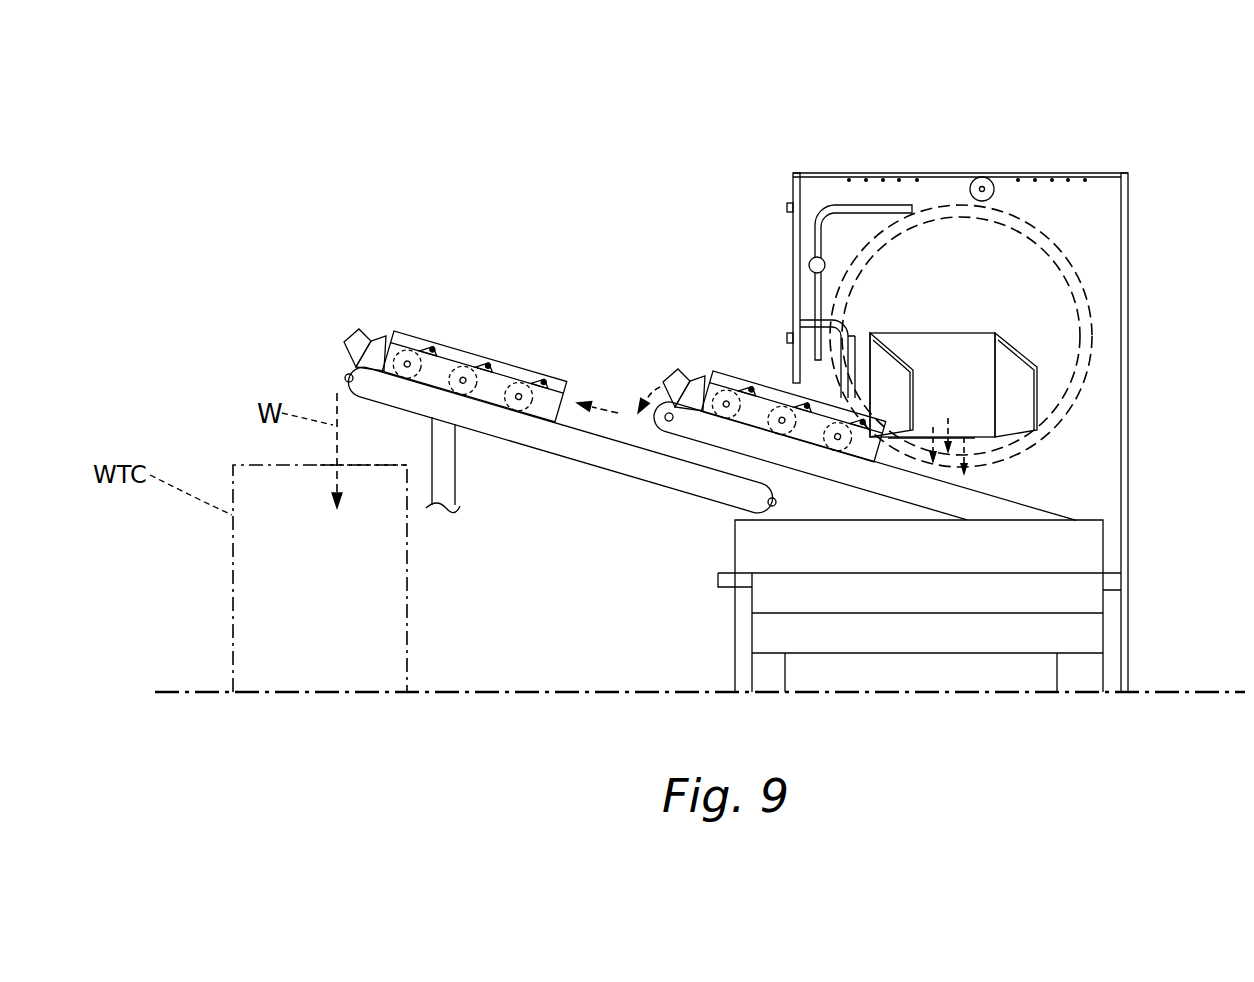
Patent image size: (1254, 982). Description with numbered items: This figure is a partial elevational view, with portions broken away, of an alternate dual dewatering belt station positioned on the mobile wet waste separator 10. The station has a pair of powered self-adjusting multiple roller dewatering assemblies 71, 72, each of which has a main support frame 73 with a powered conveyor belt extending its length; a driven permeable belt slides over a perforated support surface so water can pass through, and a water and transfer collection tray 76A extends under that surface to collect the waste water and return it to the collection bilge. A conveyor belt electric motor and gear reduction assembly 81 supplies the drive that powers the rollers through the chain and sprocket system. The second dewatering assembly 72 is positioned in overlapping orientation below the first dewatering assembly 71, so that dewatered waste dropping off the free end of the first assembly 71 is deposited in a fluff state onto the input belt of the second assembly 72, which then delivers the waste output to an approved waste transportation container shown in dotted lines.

The mobile wet waste separator 10 is at (1100, 130).
The first powered multiple roller dewatering assembly 71 is at (749, 356).
The second powered multiple roller dewatering assembly 72 is at (481, 322).
The main support frame 73 is at (560, 489).
The water and transfer collection tray 76A is at (681, 504).
The conveyor belt electric motor and gear reduction assembly 81 is at (332, 333).